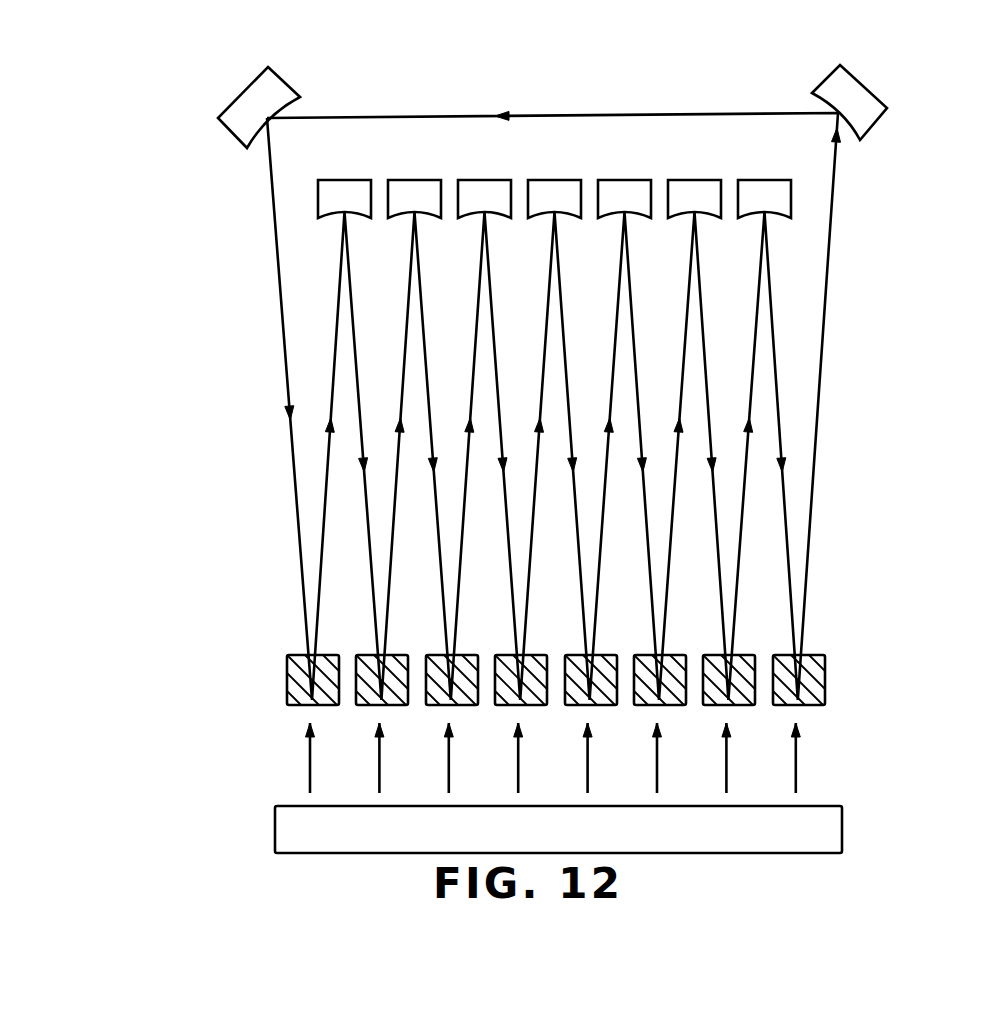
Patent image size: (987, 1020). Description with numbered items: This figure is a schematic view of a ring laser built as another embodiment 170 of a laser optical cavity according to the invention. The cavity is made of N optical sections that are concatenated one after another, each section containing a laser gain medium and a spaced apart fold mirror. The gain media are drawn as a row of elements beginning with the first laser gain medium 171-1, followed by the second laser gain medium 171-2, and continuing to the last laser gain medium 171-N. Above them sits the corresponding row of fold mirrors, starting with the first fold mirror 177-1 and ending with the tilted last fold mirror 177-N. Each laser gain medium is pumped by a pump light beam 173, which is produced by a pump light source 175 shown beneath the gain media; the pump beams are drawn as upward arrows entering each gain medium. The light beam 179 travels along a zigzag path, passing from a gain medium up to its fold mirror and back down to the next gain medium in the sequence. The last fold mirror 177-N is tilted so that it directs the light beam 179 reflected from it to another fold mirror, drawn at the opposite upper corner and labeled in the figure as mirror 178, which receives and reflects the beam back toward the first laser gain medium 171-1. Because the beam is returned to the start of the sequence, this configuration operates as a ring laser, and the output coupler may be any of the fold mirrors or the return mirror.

The laser optical cavity embodiment 170 is at (597, 85).
The first laser gain medium 171-1 is at (287, 676).
The second laser gain medium 171-2 is at (372, 706).
The last laser gain medium 171-N is at (825, 680).
The pump light beam 173 is at (379, 785).
The pump light source 175 is at (275, 836).
The first fold mirror 177-1 is at (342, 183).
The last fold mirror 177-N is at (862, 88).
The end mirror 178 is at (240, 97).
The light beam 179 is at (828, 292).